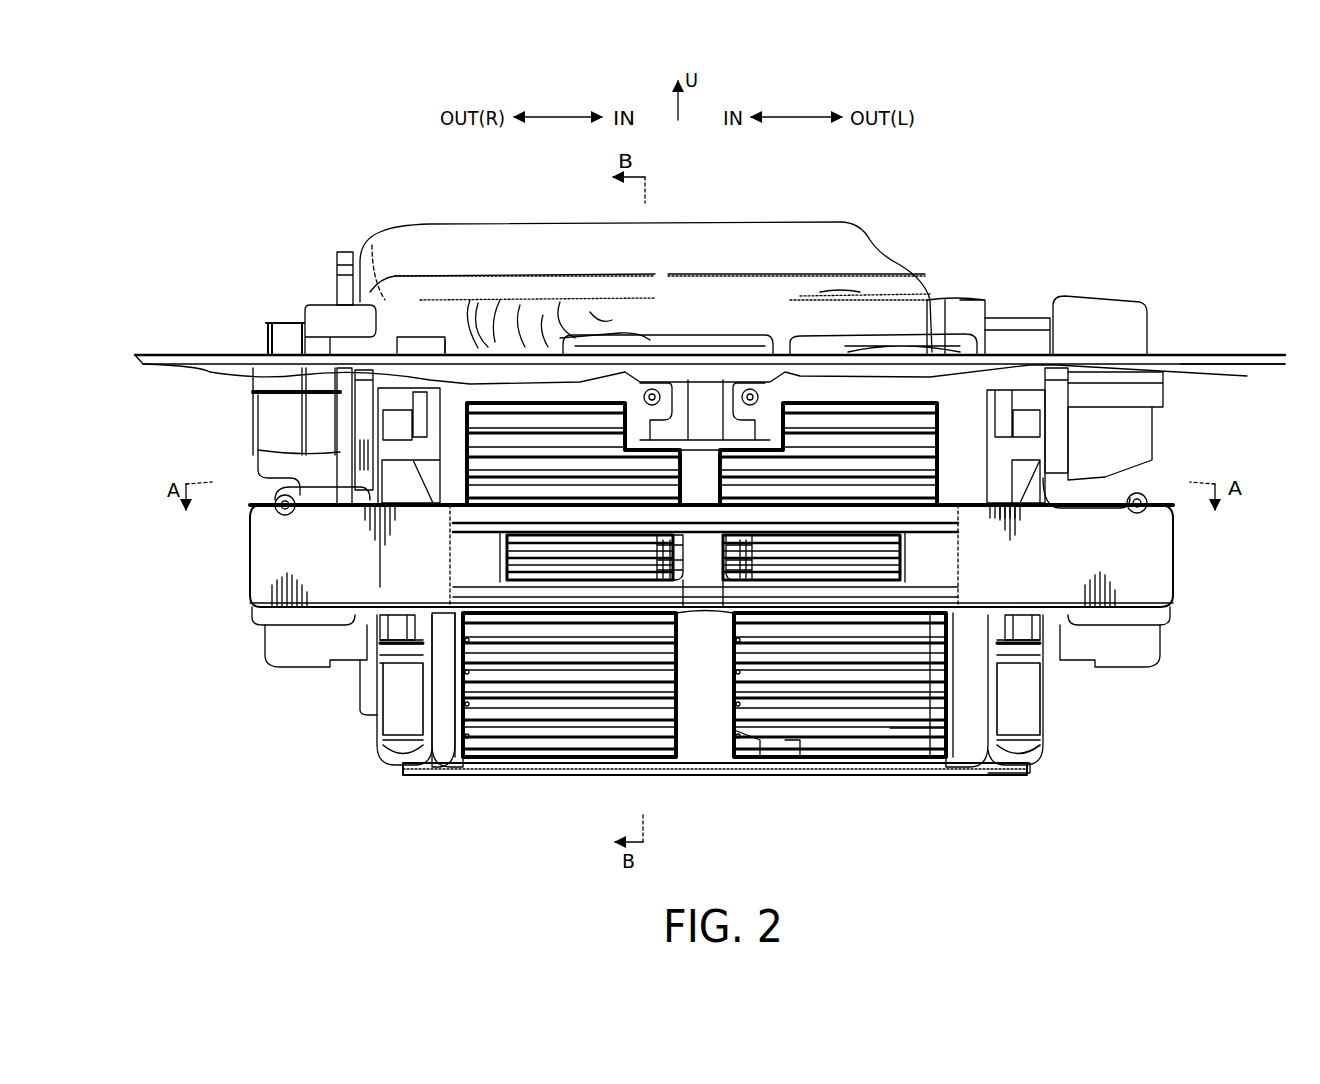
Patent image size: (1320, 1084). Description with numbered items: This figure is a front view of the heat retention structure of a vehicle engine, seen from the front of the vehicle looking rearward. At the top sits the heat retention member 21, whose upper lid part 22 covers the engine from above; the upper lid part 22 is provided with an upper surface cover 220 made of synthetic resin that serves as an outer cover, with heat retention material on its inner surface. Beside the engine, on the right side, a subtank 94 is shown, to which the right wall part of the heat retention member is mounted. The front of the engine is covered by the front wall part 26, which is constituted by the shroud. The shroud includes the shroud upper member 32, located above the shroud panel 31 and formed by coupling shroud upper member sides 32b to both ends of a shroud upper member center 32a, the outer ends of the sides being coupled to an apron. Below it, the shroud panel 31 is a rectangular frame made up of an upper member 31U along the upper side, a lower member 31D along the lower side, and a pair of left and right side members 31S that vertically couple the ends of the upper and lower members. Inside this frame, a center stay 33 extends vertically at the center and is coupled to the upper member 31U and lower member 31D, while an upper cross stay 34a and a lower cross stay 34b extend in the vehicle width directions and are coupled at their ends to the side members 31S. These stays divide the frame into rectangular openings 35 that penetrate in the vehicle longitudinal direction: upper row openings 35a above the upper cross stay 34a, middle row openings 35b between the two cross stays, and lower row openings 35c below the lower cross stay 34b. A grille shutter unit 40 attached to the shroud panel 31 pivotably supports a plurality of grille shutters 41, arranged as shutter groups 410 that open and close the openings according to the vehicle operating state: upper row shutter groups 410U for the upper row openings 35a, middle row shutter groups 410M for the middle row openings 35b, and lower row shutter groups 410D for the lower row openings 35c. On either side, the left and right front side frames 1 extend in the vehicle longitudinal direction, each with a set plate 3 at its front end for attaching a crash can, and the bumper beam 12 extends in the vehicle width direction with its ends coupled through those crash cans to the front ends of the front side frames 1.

The front side frame 1 is at (250, 648).
The set plate 3 is at (272, 508).
The bumper beam 12 is at (1176, 578).
The heat retention member 21 is at (888, 232).
The upper lid part 22 is at (545, 222).
The upper surface cover 220 is at (575, 222).
The front wall part 26 is at (1005, 792).
The shroud panel 31 is at (1047, 688).
The lower member 31D is at (560, 776).
The side member 31S is at (375, 706).
The upper member 31U is at (806, 398).
The shroud upper member 32 is at (1165, 352).
The shroud upper member center 32a is at (690, 346).
The shroud upper member side 32b is at (215, 355).
The center stay 33 is at (770, 752).
The upper cross stay 34a is at (726, 554).
The lower cross stay 34b is at (738, 632).
The openings 35 is at (462, 762).
The upper row openings 35a is at (460, 407).
The middle row openings 35b is at (500, 550).
The lower row openings 35c is at (615, 760).
The grille shutter unit 40 is at (937, 760).
The grille shutters 41 is at (797, 752).
The subtank 94 is at (277, 320).
The shutter group 410 is at (906, 760).
The upper row shutter groups 410U is at (606, 398).
The middle row shutter groups 410M is at (502, 560).
The lower row shutter groups 410D is at (505, 760).